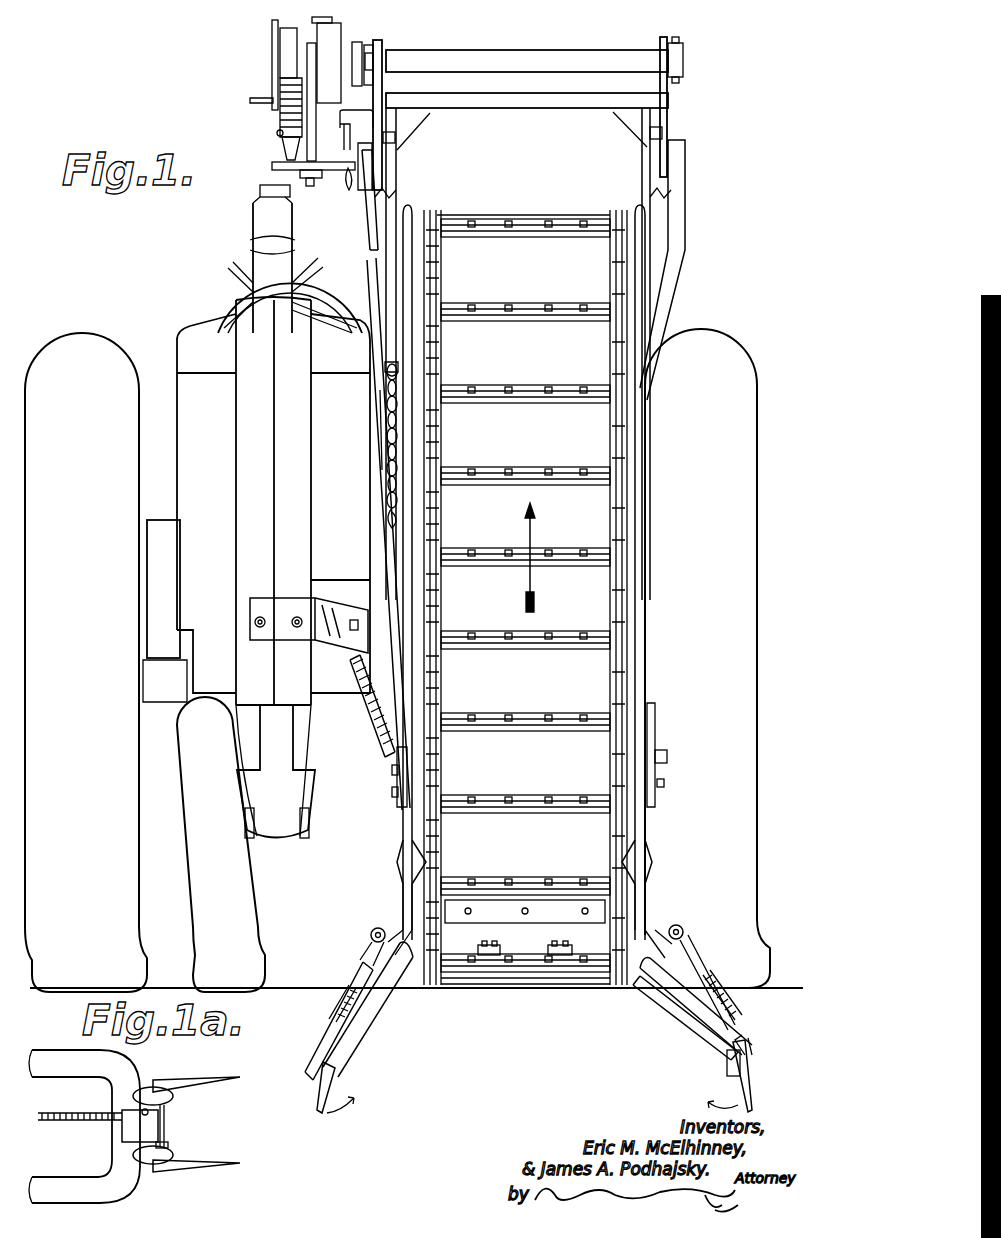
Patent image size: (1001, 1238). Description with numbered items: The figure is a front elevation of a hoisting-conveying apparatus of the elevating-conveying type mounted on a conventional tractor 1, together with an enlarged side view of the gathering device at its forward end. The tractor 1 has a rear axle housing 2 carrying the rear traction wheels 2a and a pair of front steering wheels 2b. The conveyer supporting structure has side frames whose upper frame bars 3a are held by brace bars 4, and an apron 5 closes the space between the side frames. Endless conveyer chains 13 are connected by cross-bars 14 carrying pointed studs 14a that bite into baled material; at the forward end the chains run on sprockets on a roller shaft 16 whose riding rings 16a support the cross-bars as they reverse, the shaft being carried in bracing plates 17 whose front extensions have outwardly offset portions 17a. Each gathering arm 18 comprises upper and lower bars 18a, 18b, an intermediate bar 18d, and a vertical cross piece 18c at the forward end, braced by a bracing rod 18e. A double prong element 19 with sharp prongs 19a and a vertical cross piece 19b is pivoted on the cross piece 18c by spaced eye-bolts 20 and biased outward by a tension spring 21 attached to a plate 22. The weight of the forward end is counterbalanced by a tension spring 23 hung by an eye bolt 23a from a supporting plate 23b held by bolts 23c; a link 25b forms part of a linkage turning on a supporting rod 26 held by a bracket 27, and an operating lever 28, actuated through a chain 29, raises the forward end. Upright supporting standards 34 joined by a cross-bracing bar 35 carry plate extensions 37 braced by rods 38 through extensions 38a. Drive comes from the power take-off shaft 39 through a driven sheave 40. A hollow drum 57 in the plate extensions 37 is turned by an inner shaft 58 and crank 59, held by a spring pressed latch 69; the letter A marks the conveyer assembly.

In FIG. 1, the tractor 1 is at (192, 330).
In FIG. 1, the rear axle housing 2 is at (170, 700).
In FIG. 1, the rear traction wheels 2a is at (86, 662).
In FIG. 1, the front steering wheels 2b is at (221, 844).
In FIG. 1, the upper frame bar 3a is at (645, 480).
In FIG. 1, the brace bars 4 is at (412, 368).
In FIG. 1, the apron 5 is at (554, 557).
In FIG. 1, the endless conveyer chains 13 is at (433, 452).
In FIG. 1, the cross-bars 14 is at (548, 343).
In FIG. 1, the pointed studs 14a is at (498, 468).
In FIG. 1, the roller shaft 16 is at (592, 985).
In FIG. 1, the riding rings 16a is at (492, 985).
In FIG. 1, the bracing plates 17 is at (410, 850).
In FIG. 1, the outwardly offset portion 17a is at (377, 922).
In FIG. 1, the gathering arm 18 is at (392, 1064).
In FIG. 1, the upper bar 18a is at (366, 963).
In FIG. 1A, the upper bar 18a is at (58, 1055).
In FIG. 1, the lower bar 18b is at (396, 1005).
In FIG. 1A, the lower bar 18b is at (53, 1185).
In FIG. 1, the cross piece 18c is at (333, 1015).
In FIG. 1, the intermediate bar 18d is at (365, 1005).
In FIG. 1, the bracing rod 18e is at (371, 937).
In FIG. 1, the double prong element 19 is at (308, 1097).
In FIG. 1A, the double prong element 19 is at (200, 1121).
In FIG. 1, the prongs 19a is at (350, 1136).
In FIG. 1A, the prongs 19a is at (206, 1165).
In FIG. 1, the cross piece 19b is at (727, 1060).
In FIG. 1A, the cross piece 19b is at (168, 1143).
In FIG. 1A, the eye-bolts 20 is at (173, 1094).
In FIG. 1, the tension spring 21 is at (705, 983).
In FIG. 1A, the tension spring 21 is at (72, 1113).
In FIG. 1A, the attachment plate 22 is at (125, 1137).
In FIG. 1, the tension spring 23 is at (365, 675).
In FIG. 1, the eye bolt 23a is at (354, 612).
In FIG. 1, the supporting plate 23b is at (261, 598).
In FIG. 1, the bolts 23c is at (297, 598).
In FIG. 1, the link 25b is at (396, 780).
In FIG. 1, the supporting rod 26 is at (390, 770).
In FIG. 1, the bracket 27 is at (380, 746).
In FIG. 1, the operating lever 28 is at (387, 550).
In FIG. 1, the chain 29 is at (390, 400).
In FIG. 1, the supporting standards 34 is at (392, 176).
In FIG. 1, the cross-bracing bar 35 is at (558, 103).
In FIG. 1, the plate extensions 37 is at (379, 60).
In FIG. 1, the bracing rods 38 is at (396, 203).
In FIG. 1, the extensions 38a is at (686, 152).
In FIG. 1, the power take-off shaft 39 is at (380, 472).
In FIG. 1, the driven sheave 40 is at (373, 316).
In FIG. 1, the hollow shaft 57 is at (556, 55).
In FIG. 1, the shaft 58 is at (685, 64).
In FIG. 1, the crank 59 is at (287, 160).
In FIG. 1, the spring pressed latch 69 is at (286, 156).
In FIG. 1, the conveyor assembly A is at (625, 386).